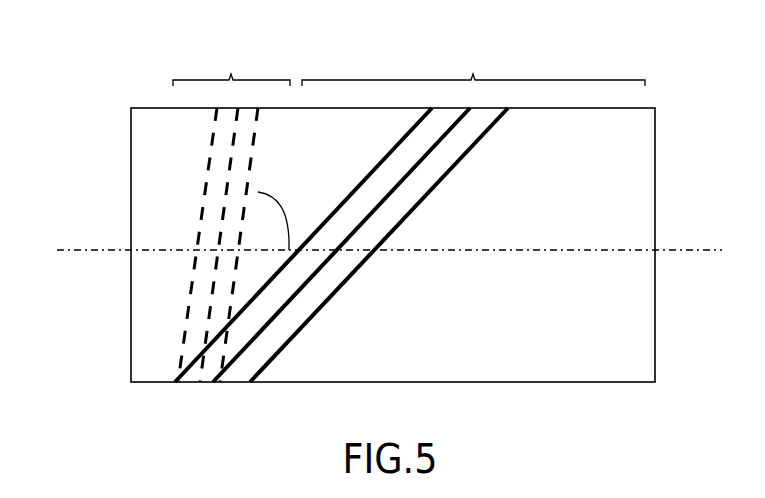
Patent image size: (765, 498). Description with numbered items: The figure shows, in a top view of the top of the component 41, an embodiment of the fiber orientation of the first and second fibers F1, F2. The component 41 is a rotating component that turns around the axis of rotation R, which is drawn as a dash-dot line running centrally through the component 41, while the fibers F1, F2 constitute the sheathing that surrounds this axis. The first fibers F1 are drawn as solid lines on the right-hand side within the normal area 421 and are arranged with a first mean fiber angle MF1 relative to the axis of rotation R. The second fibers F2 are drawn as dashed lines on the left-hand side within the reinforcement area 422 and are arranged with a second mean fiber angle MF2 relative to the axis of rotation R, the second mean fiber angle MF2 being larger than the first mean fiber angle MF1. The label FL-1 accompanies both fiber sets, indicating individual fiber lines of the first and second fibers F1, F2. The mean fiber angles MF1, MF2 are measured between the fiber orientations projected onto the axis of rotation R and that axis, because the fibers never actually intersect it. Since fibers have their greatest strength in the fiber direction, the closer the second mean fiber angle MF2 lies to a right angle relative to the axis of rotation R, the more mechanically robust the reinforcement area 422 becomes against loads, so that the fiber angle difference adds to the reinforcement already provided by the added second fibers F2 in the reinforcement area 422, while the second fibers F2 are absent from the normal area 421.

The component 41 is at (128, 314).
The normal area 421 is at (473, 60).
The reinforcement area 422 is at (231, 59).
The first fibers F1 is at (385, 165).
The second fibers F2 is at (318, 245).
The pattern line FL-1 is at (242, 180).
The first mean fiber angle MF1 is at (430, 228).
The second mean fiber angle MF2 is at (265, 218).
The axis of rotation R is at (403, 250).